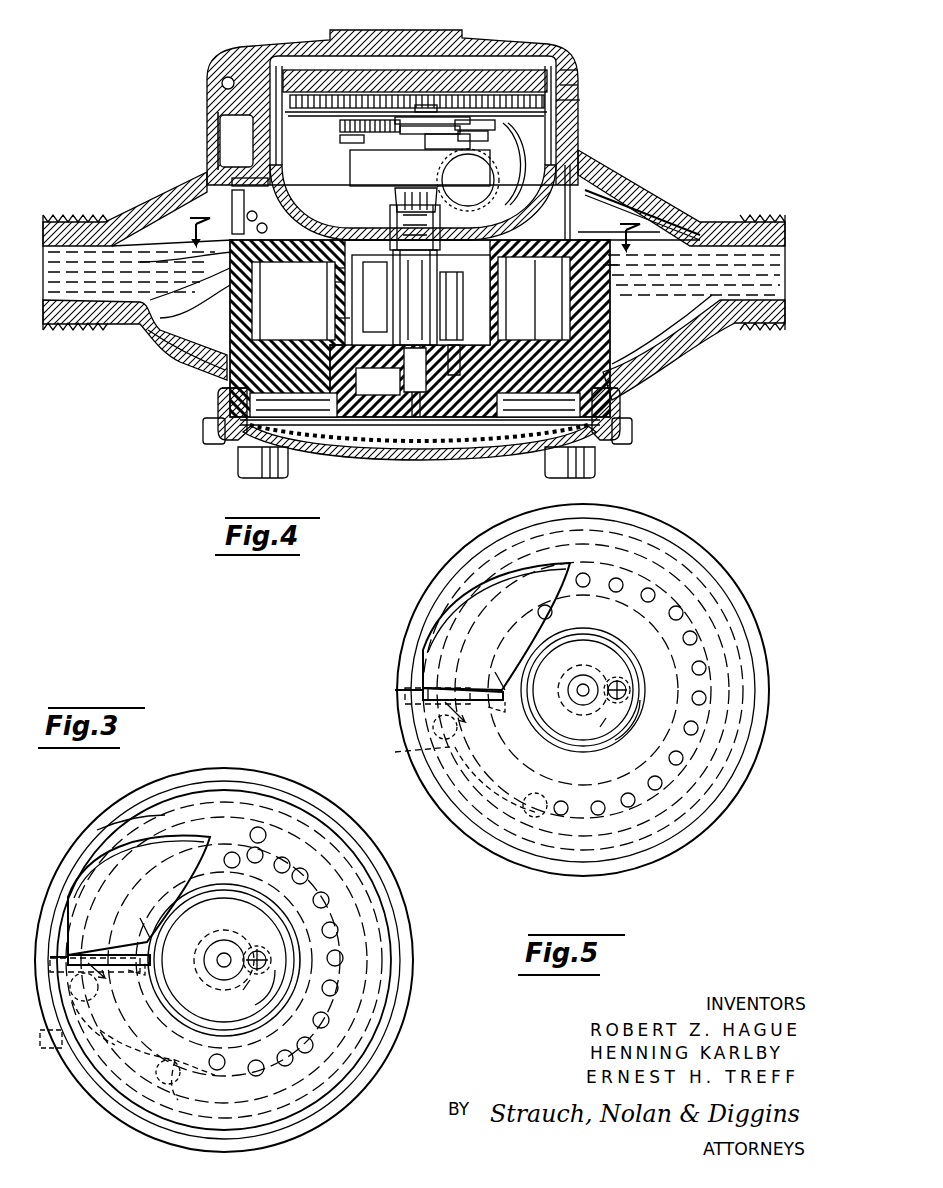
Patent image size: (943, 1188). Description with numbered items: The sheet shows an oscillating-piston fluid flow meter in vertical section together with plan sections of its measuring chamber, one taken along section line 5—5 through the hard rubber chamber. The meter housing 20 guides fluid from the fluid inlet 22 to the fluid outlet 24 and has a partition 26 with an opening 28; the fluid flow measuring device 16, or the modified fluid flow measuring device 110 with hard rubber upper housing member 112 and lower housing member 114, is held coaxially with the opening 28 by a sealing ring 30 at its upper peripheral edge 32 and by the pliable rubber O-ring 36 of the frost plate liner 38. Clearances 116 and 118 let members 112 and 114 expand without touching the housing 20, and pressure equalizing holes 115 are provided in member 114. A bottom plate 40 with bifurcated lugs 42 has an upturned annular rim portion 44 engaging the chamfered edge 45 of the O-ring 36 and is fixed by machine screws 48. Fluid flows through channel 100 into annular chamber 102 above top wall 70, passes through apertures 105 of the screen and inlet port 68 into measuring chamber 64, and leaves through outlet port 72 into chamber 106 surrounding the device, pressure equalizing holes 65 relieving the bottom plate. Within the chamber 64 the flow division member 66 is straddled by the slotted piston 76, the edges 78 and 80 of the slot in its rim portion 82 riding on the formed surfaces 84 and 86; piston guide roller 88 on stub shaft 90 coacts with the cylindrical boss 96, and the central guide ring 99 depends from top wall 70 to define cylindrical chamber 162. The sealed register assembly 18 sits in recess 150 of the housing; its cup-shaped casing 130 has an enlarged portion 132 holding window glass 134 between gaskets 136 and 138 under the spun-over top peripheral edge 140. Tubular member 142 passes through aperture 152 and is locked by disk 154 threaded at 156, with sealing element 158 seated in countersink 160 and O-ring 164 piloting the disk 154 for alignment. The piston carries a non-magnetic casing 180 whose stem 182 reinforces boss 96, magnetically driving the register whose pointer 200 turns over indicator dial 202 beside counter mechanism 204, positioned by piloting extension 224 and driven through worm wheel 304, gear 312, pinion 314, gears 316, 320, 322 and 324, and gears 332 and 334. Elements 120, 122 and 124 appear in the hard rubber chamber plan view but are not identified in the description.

In FIG. 3, the fluid flow measuring device 16 is at (280, 777).
In FIG. 4, the sealed register mechanism assembly 18 is at (562, 150).
In FIG. 4, the meter housing 20 is at (615, 172).
In FIG. 4, the fluid inlet 22 is at (80, 312).
In FIG. 4, the fluid outlet 24 is at (740, 308).
In FIG. 4, the partition 26 is at (180, 270).
In FIG. 4, the opening 28 is at (247, 222).
In FIG. 4, the sealing ring 30 is at (622, 232).
In FIG. 4, the upper peripheral edge 32 is at (236, 215).
In FIG. 4, the O-ring 36 is at (620, 395).
In FIG. 4, the frost plate liner 38 is at (293, 405).
In FIG. 4, the bottom plate 40 is at (410, 460).
In FIG. 4, the bifurcated lugs 42 is at (203, 432).
In FIG. 4, the annular rim portion 44 is at (218, 402).
In FIG. 4, the chamfered edge 45 is at (622, 418).
In FIG. 4, the machine screws 48 is at (238, 465).
In FIG. 3, the measuring chamber 64 is at (263, 800).
In FIG. 3, the pressure equalizing holes 65 is at (93, 1027).
In FIG. 4, the flow division member 66 is at (230, 310).
In FIG. 5, the flow division member 66 is at (461, 716).
In FIG. 3, the flow division member 66 is at (104, 978).
In FIG. 3, the inlet port 68 is at (105, 868).
In FIG. 3, the top wall 70 is at (160, 810).
In FIG. 3, the outlet port 72 is at (40, 1038).
In FIG. 4, the slotted piston 76 is at (545, 308).
In FIG. 5, the slotted piston 76 is at (580, 830).
In FIG. 5, the slot edge 78 is at (498, 720).
In FIG. 3, the slot edge 78 is at (140, 982).
In FIG. 5, the slot edge 80 is at (496, 684).
In FIG. 3, the slot edge 80 is at (142, 945).
In FIG. 3, the rim portion 82 is at (140, 1027).
In FIG. 4, the formed surface 84 is at (252, 295).
In FIG. 5, the formed surface 84 is at (405, 698).
In FIG. 3, the formed surface 84 is at (95, 989).
In FIG. 5, the formed surface 86 is at (440, 685).
In FIG. 3, the formed surface 86 is at (100, 947).
In FIG. 4, the piston guide roller 88 is at (392, 385).
In FIG. 5, the piston guide roller 88 is at (580, 675).
In FIG. 3, the piston guide roller 88 is at (222, 940).
In FIG. 4, the stub shaft 90 is at (412, 425).
In FIG. 5, the stub shaft 90 is at (570, 690).
In FIG. 3, the stub shaft 90 is at (205, 960).
In FIG. 5, the cylindrical boss 96 is at (616, 680).
In FIG. 3, the cylindrical boss 96 is at (256, 948).
In FIG. 3, the central guide ring 99 is at (280, 1012).
In FIG. 4, the channel 100 is at (140, 218).
In FIG. 4, the annular chamber 102 is at (222, 125).
In FIG. 4, the apertures 105 is at (258, 196).
In FIG. 4, the chamber 106 is at (165, 340).
In FIG. 4, the modified fluid flow measuring device 110 is at (612, 306).
In FIG. 5, the modified fluid flow measuring device 110 is at (719, 556).
In FIG. 4, the upper housing member 112 is at (605, 318).
In FIG. 4, the lower housing member 114 is at (538, 405).
In FIG. 5, the pressure equalizing holes 115 is at (505, 797).
In FIG. 4, the clearance 116 is at (205, 275).
In FIG. 4, the clearance 118 is at (225, 340).
In FIG. 5, the vane 120 is at (420, 668).
In FIG. 4, the vane edge 122 is at (606, 276).
In FIG. 5, the vane edge 122 is at (598, 535).
In FIG. 5, the inlet chamber 124 is at (398, 754).
In FIG. 4, the cup-shaped casing 130 is at (570, 150).
In FIG. 4, the radially enlarged portion 132 is at (591, 83).
In FIG. 4, the window glass 134 is at (425, 92).
In FIG. 4, the annular gasket 136 is at (590, 66).
In FIG. 4, the annular gasket 138 is at (590, 101).
In FIG. 4, the top peripheral edge 140 is at (574, 62).
In FIG. 4, the tubular member 142 is at (403, 312).
In FIG. 4, the cup-shaped recess 150 is at (237, 141).
In FIG. 4, the aperture 152 is at (377, 296).
In FIG. 4, the locking disk 154 is at (323, 283).
In FIG. 5, the locking disk 154 is at (640, 715).
In FIG. 3, the locking disk 154 is at (275, 992).
In FIG. 4, the threaded engagement 156 is at (440, 287).
In FIG. 4, the sealing element 158 is at (395, 200).
In FIG. 4, the countersink 160 is at (392, 228).
In FIG. 4, the cylindrical chamber 162 is at (326, 321).
In FIG. 4, the O-ring 164 is at (324, 269).
In FIG. 5, the O-ring 164 is at (618, 652).
In FIG. 3, the O-ring 164 is at (272, 920).
In FIG. 4, the casing 180 is at (505, 328).
In FIG. 5, the casing 180 is at (632, 680).
In FIG. 3, the casing 180 is at (275, 955).
In FIG. 4, the stem 182 is at (445, 400).
In FIG. 5, the stem 182 is at (598, 728).
In FIG. 3, the stem 182 is at (240, 990).
In FIG. 4, the pointer 200 is at (470, 110).
In FIG. 4, the indicator dial 202 is at (365, 80).
In FIG. 4, the counter mechanism 204 is at (509, 145).
In FIG. 4, the piloting extension 224 is at (446, 156).
In FIG. 4, the worm wheel 304 is at (468, 180).
In FIG. 4, the gear 312 is at (345, 170).
In FIG. 4, the pinion 314 is at (342, 158).
In FIG. 4, the gear 316 is at (345, 140).
In FIG. 4, the gear 320 is at (400, 125).
In FIG. 4, the gear 322 is at (410, 135).
In FIG. 4, the gear 324 is at (428, 115).
In FIG. 4, the gear 332 is at (477, 153).
In FIG. 4, the gear 334 is at (470, 130).
In FIG. 4, the section line 5 is at (415, 225).